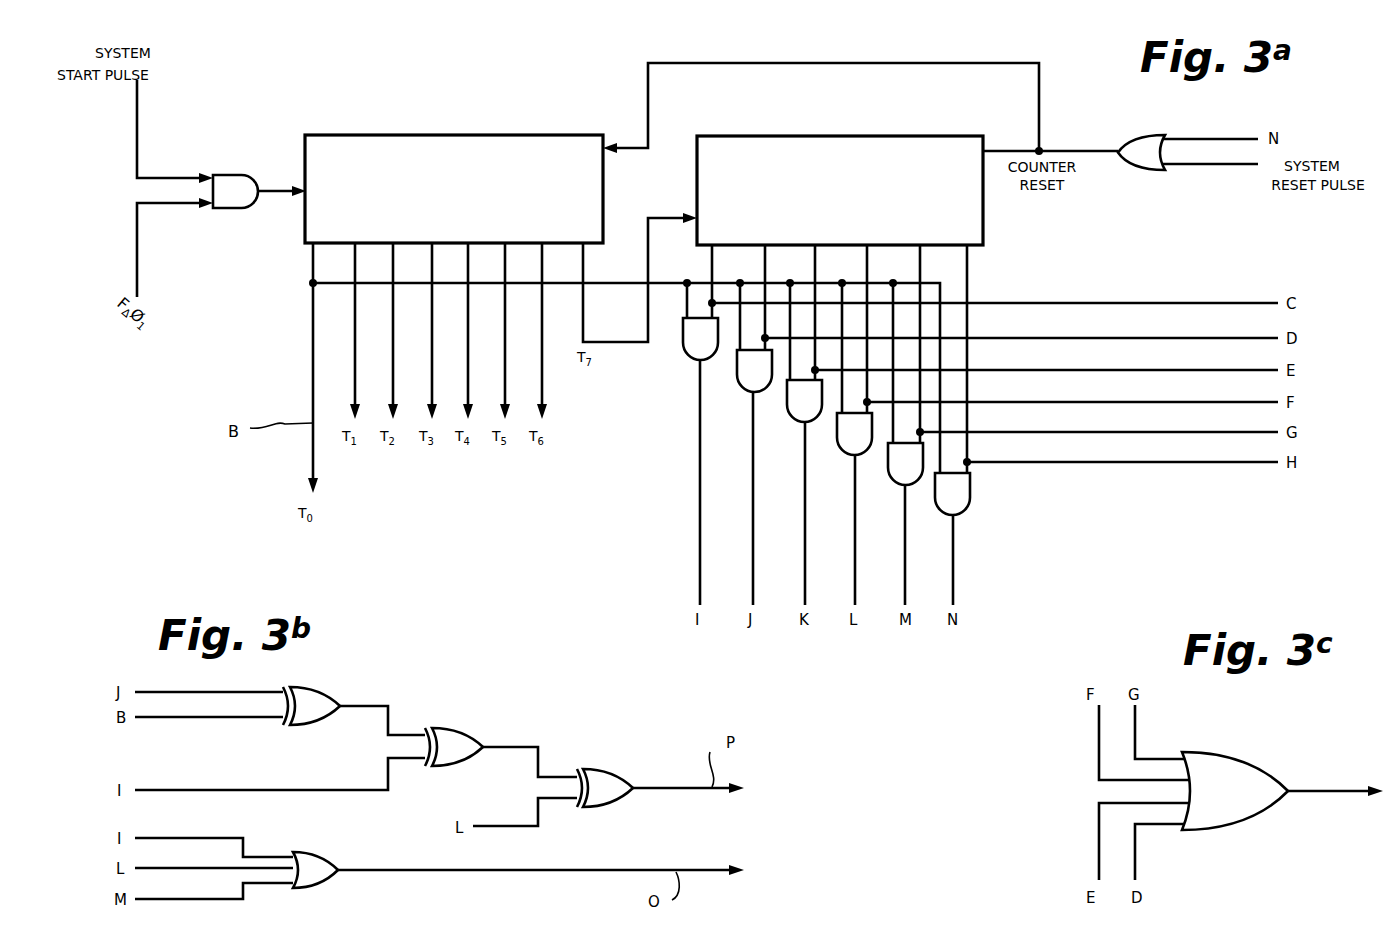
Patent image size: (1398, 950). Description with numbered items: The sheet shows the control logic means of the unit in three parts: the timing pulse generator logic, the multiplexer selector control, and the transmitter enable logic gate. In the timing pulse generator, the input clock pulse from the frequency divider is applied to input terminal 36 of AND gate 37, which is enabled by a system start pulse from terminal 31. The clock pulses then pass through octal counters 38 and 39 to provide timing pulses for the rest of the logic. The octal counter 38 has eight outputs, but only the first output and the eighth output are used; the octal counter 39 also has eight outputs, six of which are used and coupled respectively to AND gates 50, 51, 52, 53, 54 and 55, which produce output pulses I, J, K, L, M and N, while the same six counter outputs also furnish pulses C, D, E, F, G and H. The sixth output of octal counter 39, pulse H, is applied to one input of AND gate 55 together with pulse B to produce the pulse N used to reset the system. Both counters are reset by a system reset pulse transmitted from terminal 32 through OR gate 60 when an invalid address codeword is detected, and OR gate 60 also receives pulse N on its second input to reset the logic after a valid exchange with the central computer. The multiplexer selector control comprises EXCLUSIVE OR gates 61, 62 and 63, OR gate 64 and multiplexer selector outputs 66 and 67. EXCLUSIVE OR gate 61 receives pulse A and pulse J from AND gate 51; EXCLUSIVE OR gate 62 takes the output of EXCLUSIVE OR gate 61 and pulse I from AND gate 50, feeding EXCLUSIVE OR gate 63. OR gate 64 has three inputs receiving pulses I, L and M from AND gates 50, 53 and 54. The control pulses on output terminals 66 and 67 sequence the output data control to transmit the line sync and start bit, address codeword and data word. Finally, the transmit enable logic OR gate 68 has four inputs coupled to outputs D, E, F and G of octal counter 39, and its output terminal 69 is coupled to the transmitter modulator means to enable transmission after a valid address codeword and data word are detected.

In FIG. 3a, the terminal 31 is at (137, 120).
In FIG. 3a, the input terminal 36 is at (137, 252).
In FIG. 3a, the AND gate 37 is at (240, 175).
In FIG. 3a, the octal counter 38 is at (453, 135).
In FIG. 3a, the octal counter 39 is at (867, 136).
In FIG. 3a, the OR gate 60 is at (1148, 170).
In FIG. 3a, the terminal 32 is at (1200, 164).
In FIG. 3a, the AND gate 50 is at (684, 352).
In FIG. 3a, the AND gate 51 is at (738, 392).
In FIG. 3a, the AND gate 52 is at (788, 422).
In FIG. 3a, the AND gate 53 is at (838, 455).
In FIG. 3a, the AND gate 54 is at (889, 485).
In FIG. 3a, the AND gate 55 is at (970, 502).
In FIG. 3b, the EXCLUSIVE OR gate 61 is at (310, 725).
In FIG. 3b, the EXCLUSIVE OR gate 62 is at (460, 728).
In FIG. 3b, the EXCLUSIVE OR gate 63 is at (615, 769).
In FIG. 3b, the OR gate 64 is at (310, 888).
In FIG. 3b, the multiplexer selector output 66 is at (748, 871).
In FIG. 3b, the multiplexer selector output 67 is at (748, 789).
In FIG. 3c, the transmit enable logic OR gate 68 is at (1265, 767).
In FIG. 3c, the output terminal 69 is at (1345, 790).